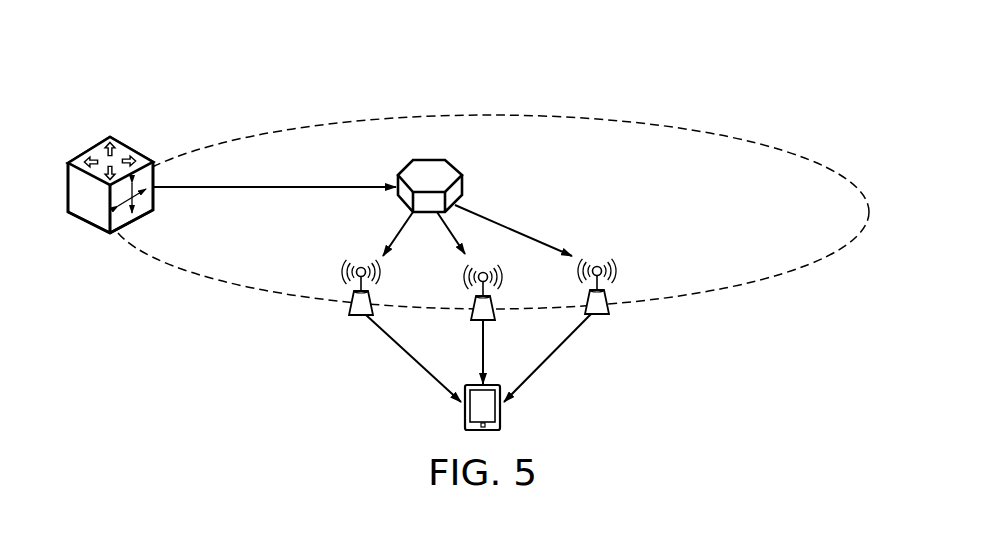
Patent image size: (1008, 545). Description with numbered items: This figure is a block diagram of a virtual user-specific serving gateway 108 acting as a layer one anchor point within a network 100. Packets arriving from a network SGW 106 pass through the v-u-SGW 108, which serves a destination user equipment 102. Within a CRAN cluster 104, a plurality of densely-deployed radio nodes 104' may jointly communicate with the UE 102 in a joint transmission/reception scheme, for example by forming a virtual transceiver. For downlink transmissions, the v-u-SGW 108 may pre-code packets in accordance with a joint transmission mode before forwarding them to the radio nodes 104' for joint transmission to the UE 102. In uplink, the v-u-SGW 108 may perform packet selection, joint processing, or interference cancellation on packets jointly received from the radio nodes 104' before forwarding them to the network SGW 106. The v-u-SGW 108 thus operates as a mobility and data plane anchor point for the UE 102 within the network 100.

The network 100 is at (668, 88).
The user equipment 102 is at (465, 420).
The CRAN cluster 104 is at (489, 188).
The radio node 104' is at (483, 317).
The network SGW 106 is at (92, 150).
The virtual user-specific SGW 108 is at (463, 186).